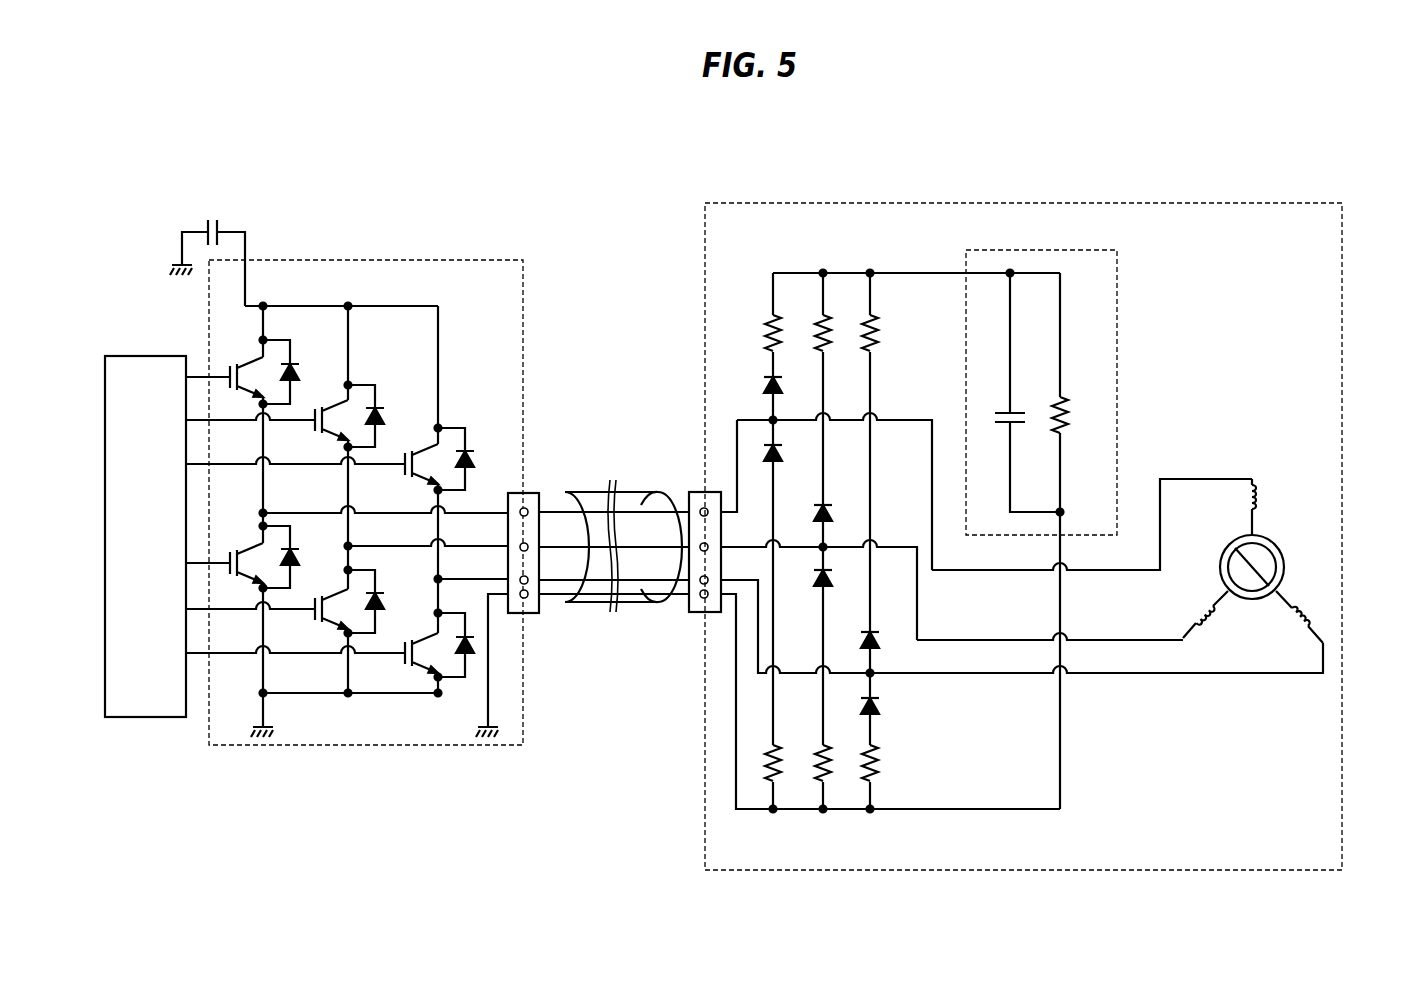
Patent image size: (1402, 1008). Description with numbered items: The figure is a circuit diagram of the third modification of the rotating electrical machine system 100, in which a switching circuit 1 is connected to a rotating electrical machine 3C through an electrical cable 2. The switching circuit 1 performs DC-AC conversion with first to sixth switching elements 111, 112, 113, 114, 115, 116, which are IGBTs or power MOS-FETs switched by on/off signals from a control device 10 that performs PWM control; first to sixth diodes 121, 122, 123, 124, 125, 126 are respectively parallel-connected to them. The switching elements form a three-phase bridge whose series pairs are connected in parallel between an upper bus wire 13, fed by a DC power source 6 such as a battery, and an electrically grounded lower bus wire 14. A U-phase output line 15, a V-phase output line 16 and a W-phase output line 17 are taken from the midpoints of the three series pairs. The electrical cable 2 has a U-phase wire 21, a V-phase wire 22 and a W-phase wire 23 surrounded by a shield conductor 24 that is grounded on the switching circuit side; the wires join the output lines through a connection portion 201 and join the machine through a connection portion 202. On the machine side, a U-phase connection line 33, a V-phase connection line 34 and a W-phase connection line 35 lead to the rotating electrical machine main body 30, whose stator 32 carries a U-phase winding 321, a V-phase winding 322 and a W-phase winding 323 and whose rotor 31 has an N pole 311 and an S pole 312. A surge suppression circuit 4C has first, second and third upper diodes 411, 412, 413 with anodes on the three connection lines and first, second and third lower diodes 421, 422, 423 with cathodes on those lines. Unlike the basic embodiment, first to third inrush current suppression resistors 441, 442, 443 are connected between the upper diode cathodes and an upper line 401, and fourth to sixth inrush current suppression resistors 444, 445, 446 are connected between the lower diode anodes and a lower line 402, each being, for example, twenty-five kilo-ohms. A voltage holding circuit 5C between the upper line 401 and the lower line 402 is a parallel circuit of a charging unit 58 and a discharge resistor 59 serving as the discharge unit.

The rotating electrical machine system 100 is at (1298, 170).
The switching circuit 1 is at (455, 258).
The electrical cable 2 is at (614, 542).
The rotating electrical machine 3C is at (789, 202).
The surge suppression circuit 4C is at (761, 264).
The voltage holding circuit 5C is at (1018, 250).
The DC power source 6 is at (219, 226).
The control device 10 is at (133, 355).
The upper bus wire 13 is at (378, 305).
The lower bus wire 14 is at (311, 696).
The U-phase output line 15 is at (299, 512).
The V-phase output line 16 is at (379, 546).
The W-phase output line 17 is at (462, 579).
The U-phase wire 21 is at (557, 508).
The V-phase wire 22 is at (567, 545).
The W-phase wire 23 is at (558, 592).
The shield conductor 24 is at (629, 603).
The rotating electrical machine main body 30 is at (1219, 454).
The rotor 31 is at (1270, 543).
The stator 32 is at (1263, 490).
The U-phase connection line 33 is at (975, 575).
The V-phase connection line 34 is at (995, 639).
The W-phase connection line 35 is at (1020, 675).
The charging unit 58 is at (1004, 412).
The discharge resistor 59 is at (1064, 397).
The first switching element 111 is at (236, 361).
The second switching element 112 is at (236, 547).
The third switching element 113 is at (318, 432).
The fourth switching element 114 is at (318, 620).
The fifth switching element 115 is at (409, 474).
The sixth switching element 116 is at (409, 664).
The first diode 121 is at (294, 375).
The second diode 122 is at (294, 563).
The third diode 123 is at (379, 423).
The fourth diode 124 is at (379, 611).
The fifth diode 125 is at (472, 458).
The sixth diode 126 is at (462, 674).
The connection portion 201 is at (535, 618).
The connection portion 202 is at (697, 614).
The N pole 311 is at (1268, 571).
The S pole 312 is at (1256, 592).
The U-phase winding 321 is at (1246, 497).
The V-phase winding 322 is at (1200, 612).
The W-phase winding 323 is at (1303, 626).
The upper line 401 is at (895, 272).
The lower line 402 is at (934, 808).
The first upper diode 411 is at (767, 391).
The second upper diode 412 is at (827, 511).
The third upper diode 413 is at (875, 644).
The first lower diode 421 is at (778, 462).
The second lower diode 422 is at (825, 587).
The third lower diode 423 is at (877, 706).
The first inrush current suppression resistor 441 is at (777, 315).
The second inrush current suppression resistor 442 is at (827, 315).
The third inrush current suppression resistor 443 is at (876, 325).
The fourth inrush current suppression resistor 444 is at (770, 783).
The fifth inrush current suppression resistor 445 is at (819, 783).
The sixth inrush current suppression resistor 446 is at (866, 783).